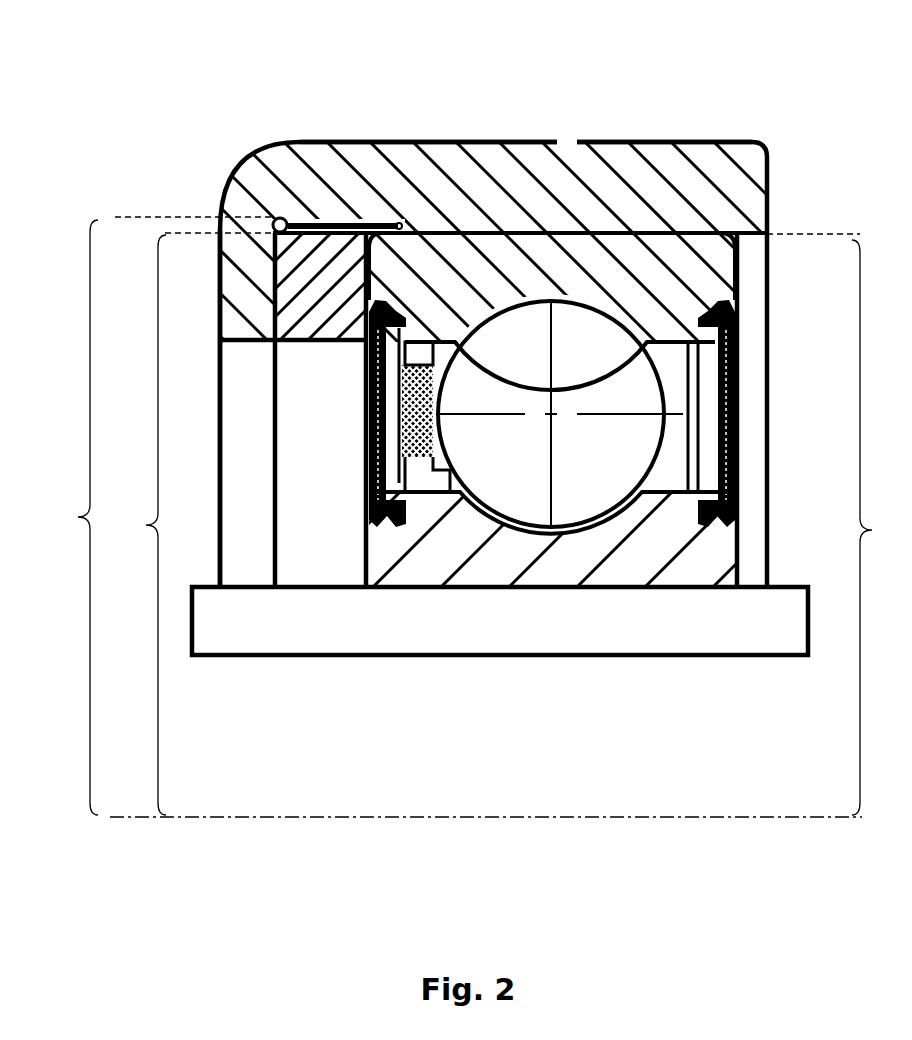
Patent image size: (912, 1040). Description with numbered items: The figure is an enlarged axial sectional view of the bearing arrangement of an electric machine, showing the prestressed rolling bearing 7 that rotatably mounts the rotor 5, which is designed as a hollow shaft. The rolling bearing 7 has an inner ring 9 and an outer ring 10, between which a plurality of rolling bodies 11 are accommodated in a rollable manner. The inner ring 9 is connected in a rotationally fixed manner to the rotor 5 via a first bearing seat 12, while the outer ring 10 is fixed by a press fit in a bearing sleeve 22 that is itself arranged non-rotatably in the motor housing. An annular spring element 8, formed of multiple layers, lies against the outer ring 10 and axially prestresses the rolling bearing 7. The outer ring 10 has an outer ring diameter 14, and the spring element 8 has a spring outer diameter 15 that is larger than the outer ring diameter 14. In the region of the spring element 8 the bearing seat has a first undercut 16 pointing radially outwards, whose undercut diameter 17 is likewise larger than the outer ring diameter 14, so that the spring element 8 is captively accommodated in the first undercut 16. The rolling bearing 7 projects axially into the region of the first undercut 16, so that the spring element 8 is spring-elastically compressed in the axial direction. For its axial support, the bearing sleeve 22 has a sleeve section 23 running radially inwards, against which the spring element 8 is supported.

The rotor 5 is at (302, 608).
The rolling bearing 7 is at (490, 675).
The spring element 8 is at (313, 283).
The inner ring 9 is at (624, 555).
The outer ring 10 is at (445, 250).
The rolling bodies 11 is at (583, 460).
The first bearing seat 12 is at (672, 188).
The outer ring diameter 14 is at (531, 218).
The spring outer diameter 15 is at (189, 524).
The first undercut 16 is at (322, 199).
The undercut diameter 17 is at (155, 516).
The bearing sleeve 22 is at (628, 140).
The sleeve section 23 is at (250, 291).